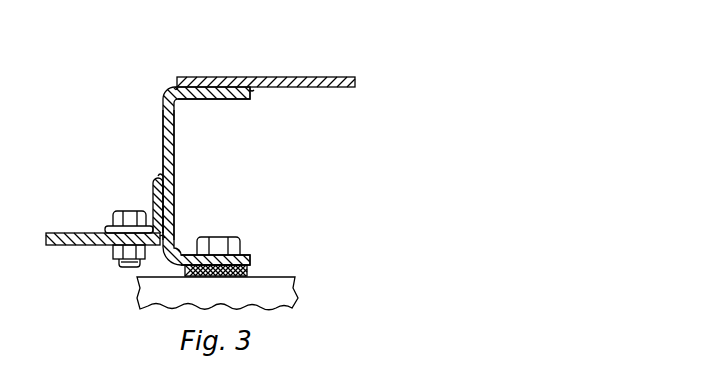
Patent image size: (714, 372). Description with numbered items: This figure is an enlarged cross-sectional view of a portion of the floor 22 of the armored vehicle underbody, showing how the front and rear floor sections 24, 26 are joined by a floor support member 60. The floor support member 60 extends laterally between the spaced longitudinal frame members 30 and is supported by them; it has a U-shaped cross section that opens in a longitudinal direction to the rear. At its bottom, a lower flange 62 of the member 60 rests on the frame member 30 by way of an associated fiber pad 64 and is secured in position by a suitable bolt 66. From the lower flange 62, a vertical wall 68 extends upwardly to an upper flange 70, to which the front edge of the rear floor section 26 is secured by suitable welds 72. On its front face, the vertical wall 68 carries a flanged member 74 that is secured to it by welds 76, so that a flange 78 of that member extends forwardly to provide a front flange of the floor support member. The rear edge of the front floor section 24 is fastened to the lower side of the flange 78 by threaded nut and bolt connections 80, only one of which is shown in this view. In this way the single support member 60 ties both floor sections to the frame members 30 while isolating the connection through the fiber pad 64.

The floor 22 is at (123, 121).
The front floor section 24 is at (68, 246).
The rear floor section 26 is at (331, 78).
The longitudinal frame member 30 is at (168, 294).
The floor support member 60 is at (170, 92).
The lower flange 62 is at (251, 260).
The fiber pad 64 is at (249, 270).
The bolt 66 is at (221, 237).
The vertical wall 68 is at (163, 173).
The upper flange 70 is at (228, 99).
The weld 72 is at (170, 88).
The flanged member 74 is at (152, 181).
The weld 76 is at (160, 173).
The flange 78 is at (107, 227).
The threaded nut and bolt connection 80 is at (113, 262).